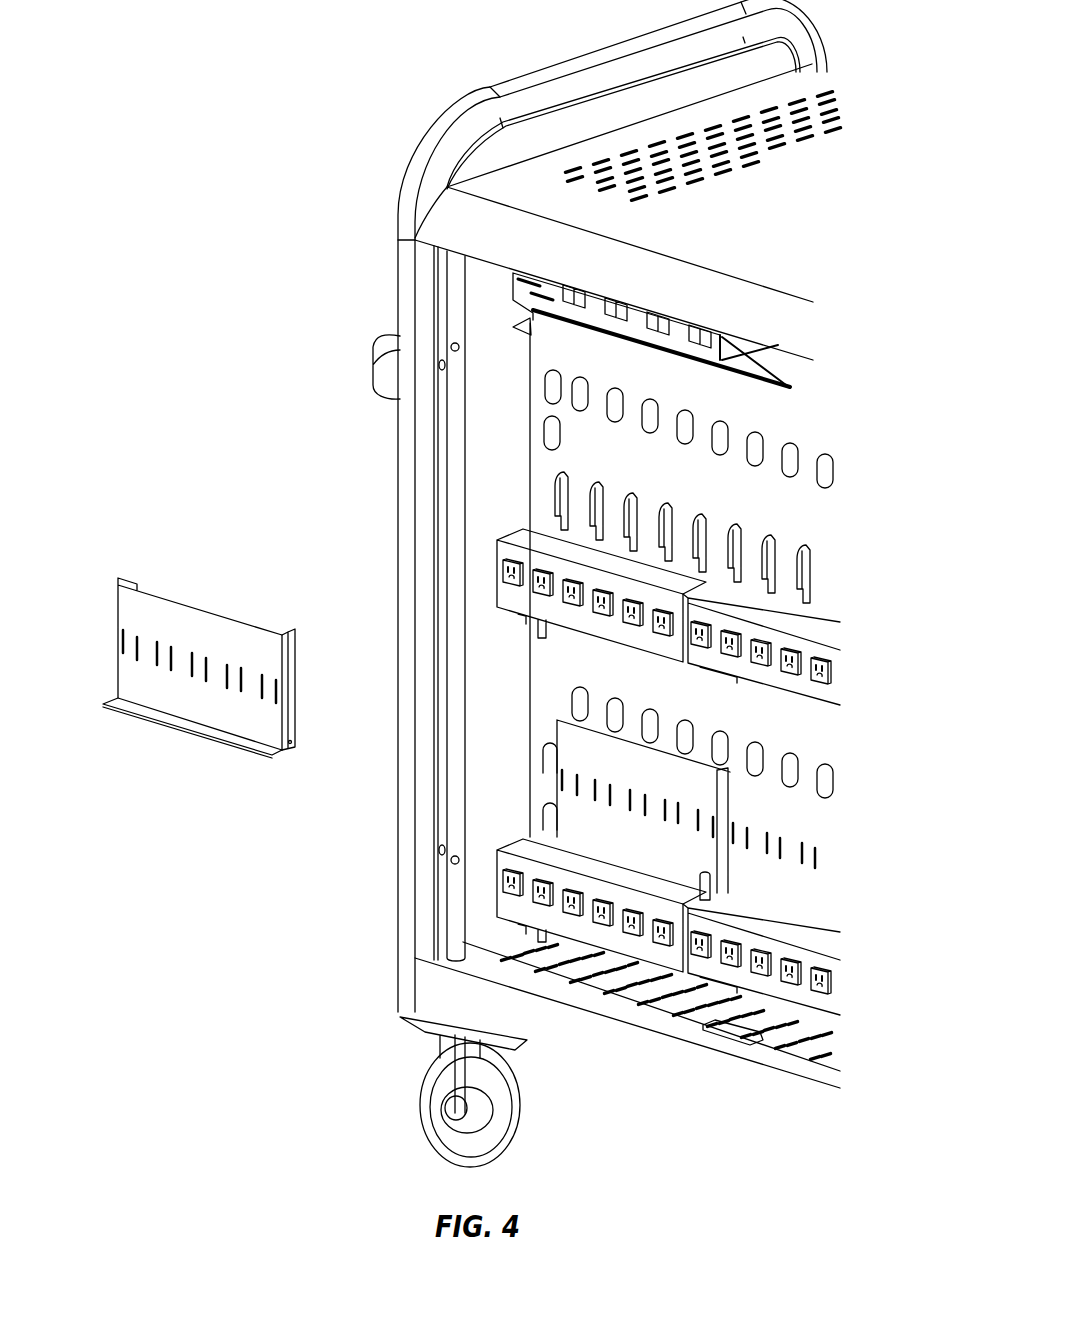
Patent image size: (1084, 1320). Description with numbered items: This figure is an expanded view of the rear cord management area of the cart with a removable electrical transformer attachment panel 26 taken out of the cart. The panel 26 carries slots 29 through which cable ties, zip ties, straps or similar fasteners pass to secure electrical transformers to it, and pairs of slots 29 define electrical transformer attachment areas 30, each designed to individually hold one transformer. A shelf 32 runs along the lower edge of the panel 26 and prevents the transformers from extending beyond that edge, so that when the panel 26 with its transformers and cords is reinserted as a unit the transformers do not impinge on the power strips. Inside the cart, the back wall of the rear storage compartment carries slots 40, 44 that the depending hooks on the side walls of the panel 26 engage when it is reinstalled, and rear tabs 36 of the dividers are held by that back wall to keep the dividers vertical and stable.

The electrical transformer attachment panel 26 is at (195, 622).
The slots 29 is at (277, 683).
The electrical transformer attachment areas 30 is at (267, 700).
The shelf 32 is at (163, 718).
The rear tabs 36 is at (553, 490).
The slots 40 is at (540, 393).
The slots 44 is at (555, 508).